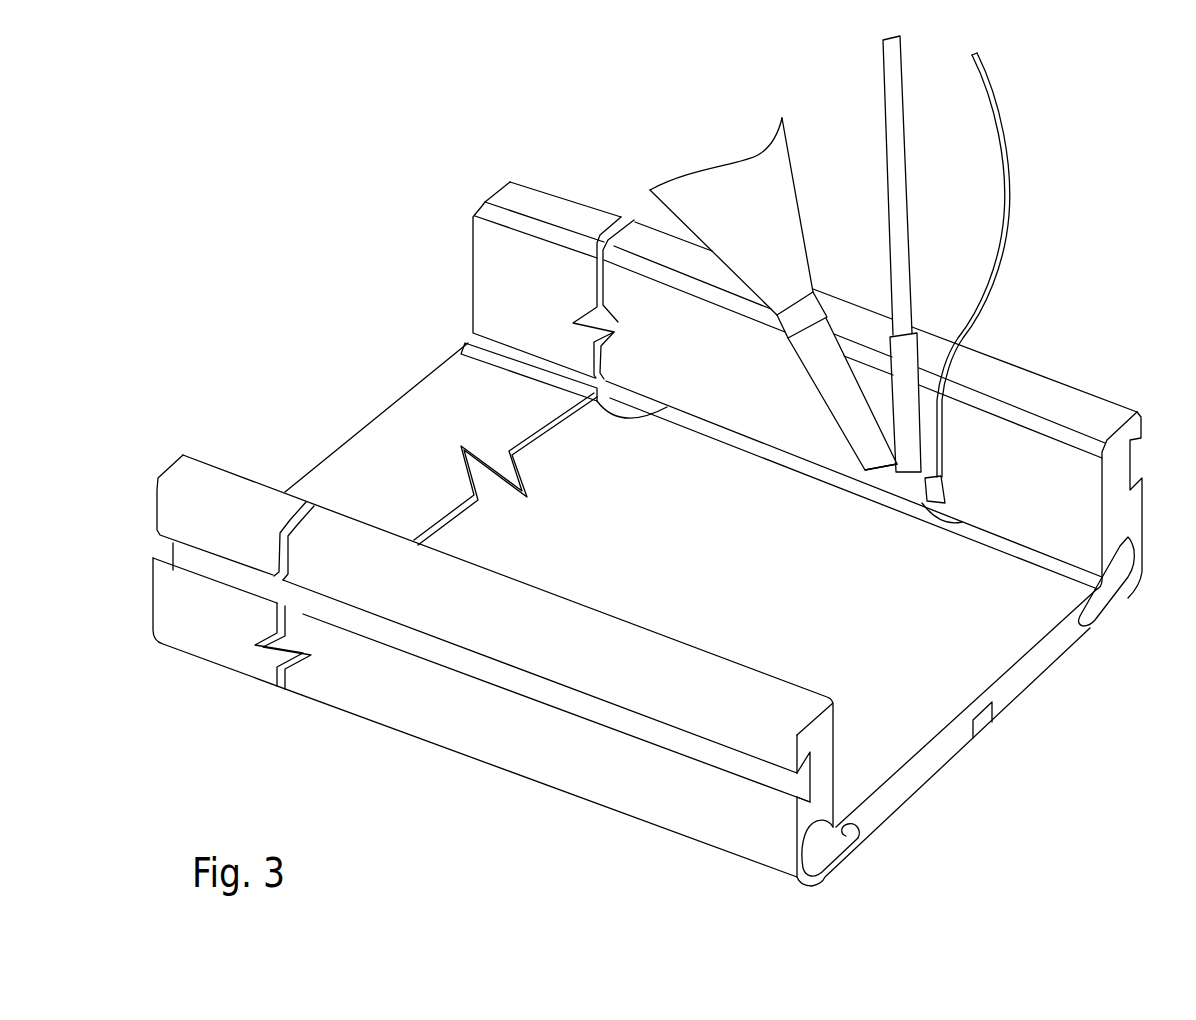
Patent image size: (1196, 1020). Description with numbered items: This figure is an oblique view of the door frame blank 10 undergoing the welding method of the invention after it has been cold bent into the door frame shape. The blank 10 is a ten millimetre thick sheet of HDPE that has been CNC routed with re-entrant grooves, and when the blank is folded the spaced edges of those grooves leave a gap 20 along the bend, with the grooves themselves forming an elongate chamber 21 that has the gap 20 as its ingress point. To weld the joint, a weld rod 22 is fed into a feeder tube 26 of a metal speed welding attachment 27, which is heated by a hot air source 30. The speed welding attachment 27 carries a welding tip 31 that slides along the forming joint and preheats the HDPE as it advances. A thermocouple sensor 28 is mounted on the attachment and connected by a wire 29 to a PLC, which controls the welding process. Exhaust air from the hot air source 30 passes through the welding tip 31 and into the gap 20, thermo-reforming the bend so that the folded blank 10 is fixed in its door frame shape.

The door frame blank 10 is at (1010, 686).
The gap 20 is at (465, 343).
The elongate chamber 21 is at (1120, 567).
The weld rod 22 is at (883, 92).
The feeder tube 26 is at (908, 400).
The speed welding attachment 27 is at (842, 400).
The thermocouple sensor 28 is at (943, 480).
The wire 29 is at (1007, 151).
The hot air source 30 is at (753, 200).
The welding tip 31 is at (897, 480).